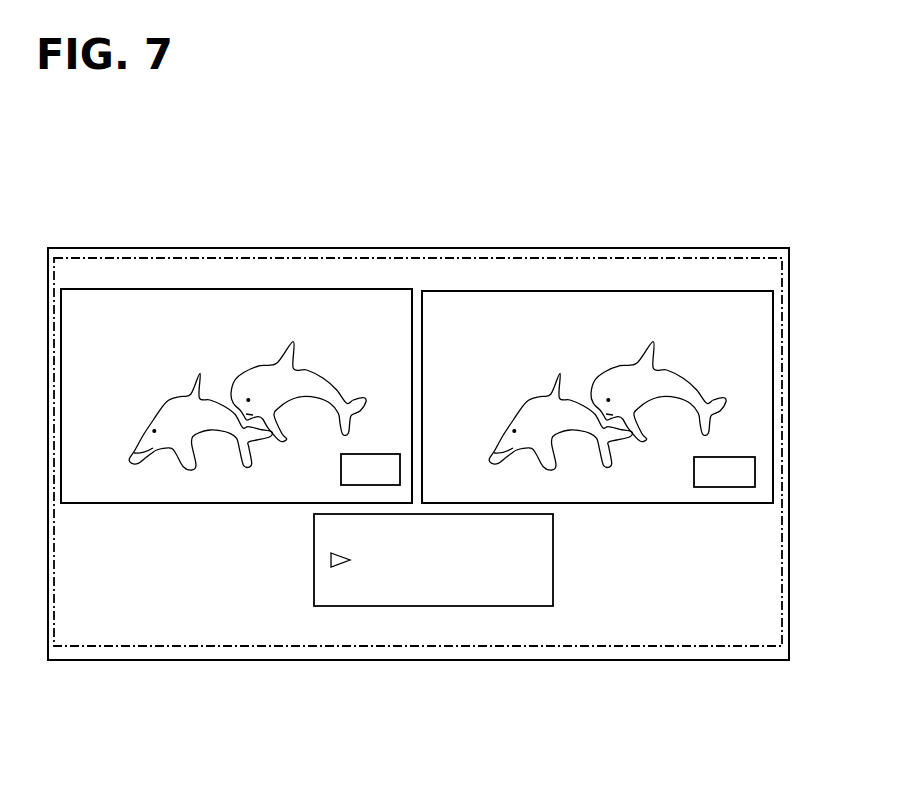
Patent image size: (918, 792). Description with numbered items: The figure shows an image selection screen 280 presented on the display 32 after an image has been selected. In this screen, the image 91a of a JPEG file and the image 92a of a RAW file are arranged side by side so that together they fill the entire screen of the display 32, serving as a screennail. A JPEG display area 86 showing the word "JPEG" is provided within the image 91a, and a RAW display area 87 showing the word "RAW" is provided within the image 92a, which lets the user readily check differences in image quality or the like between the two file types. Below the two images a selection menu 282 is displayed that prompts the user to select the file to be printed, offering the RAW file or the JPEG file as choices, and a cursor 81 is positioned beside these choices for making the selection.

The display 32 is at (770, 249).
The image selection screen 280 is at (689, 258).
The image 91a is at (172, 289).
The image 92a is at (483, 291).
The JPEG display area 86 is at (377, 454).
The RAW display area 87 is at (718, 457).
The selection menu 282 is at (444, 606).
The cursor 81 is at (331, 553).